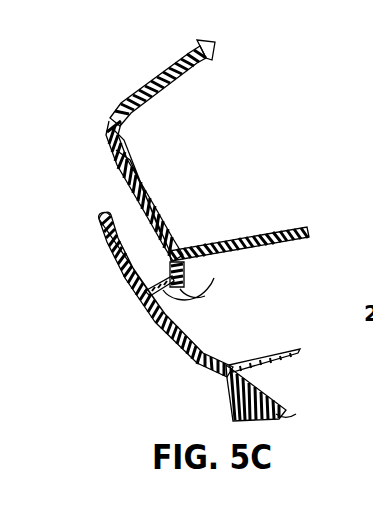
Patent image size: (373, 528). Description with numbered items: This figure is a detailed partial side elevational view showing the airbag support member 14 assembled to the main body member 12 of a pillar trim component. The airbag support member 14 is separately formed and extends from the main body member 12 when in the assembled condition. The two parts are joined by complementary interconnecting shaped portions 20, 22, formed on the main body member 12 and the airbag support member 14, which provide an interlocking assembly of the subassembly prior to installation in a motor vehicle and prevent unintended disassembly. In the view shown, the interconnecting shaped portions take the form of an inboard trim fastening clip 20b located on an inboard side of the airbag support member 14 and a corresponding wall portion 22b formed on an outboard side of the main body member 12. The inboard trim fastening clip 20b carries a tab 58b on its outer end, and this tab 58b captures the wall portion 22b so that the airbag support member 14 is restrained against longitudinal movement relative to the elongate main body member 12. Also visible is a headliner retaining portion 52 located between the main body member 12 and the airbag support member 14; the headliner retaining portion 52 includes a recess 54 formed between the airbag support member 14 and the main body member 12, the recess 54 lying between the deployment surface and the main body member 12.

The main body member 12 is at (184, 355).
The airbag support member 14 is at (195, 60).
The complementary interconnecting shaped portion 20 is at (143, 262).
The inboard trim fastening clip 20b is at (178, 288).
The complementary interconnecting shaped portion 22 is at (128, 297).
The wall portion 22b is at (157, 288).
The headliner retaining portion 52 is at (108, 167).
The recess 54 is at (121, 228).
The tab 58b is at (178, 291).